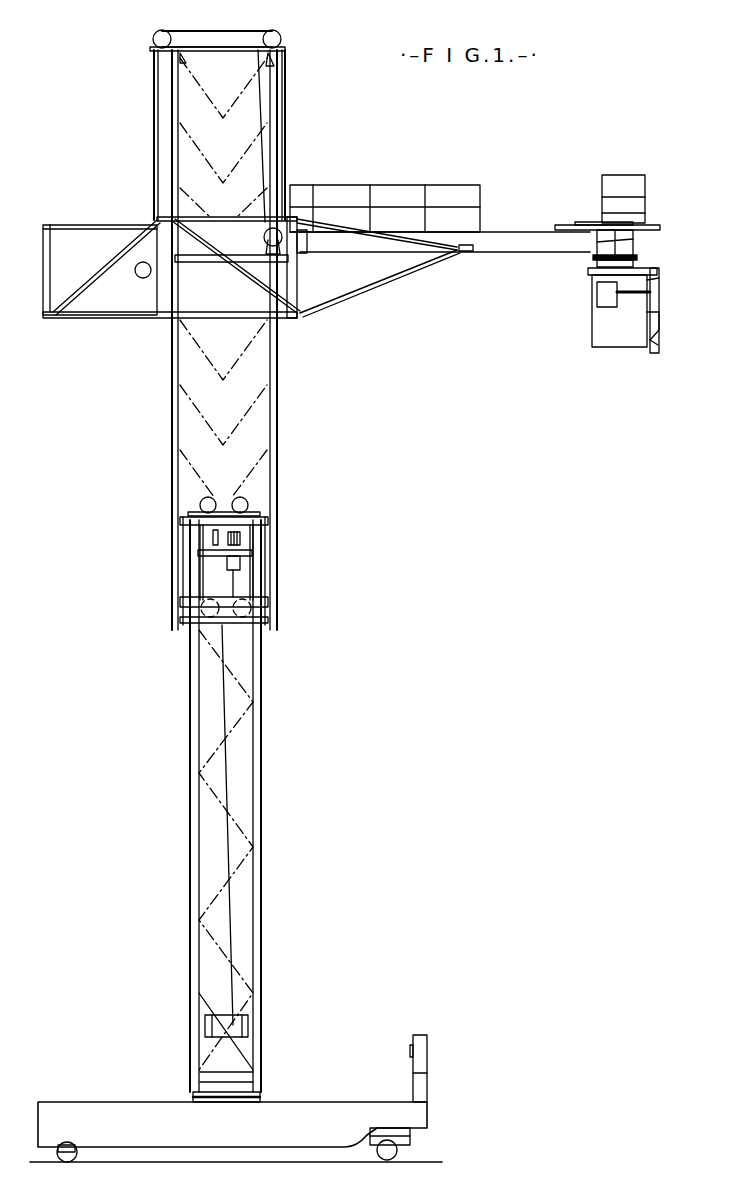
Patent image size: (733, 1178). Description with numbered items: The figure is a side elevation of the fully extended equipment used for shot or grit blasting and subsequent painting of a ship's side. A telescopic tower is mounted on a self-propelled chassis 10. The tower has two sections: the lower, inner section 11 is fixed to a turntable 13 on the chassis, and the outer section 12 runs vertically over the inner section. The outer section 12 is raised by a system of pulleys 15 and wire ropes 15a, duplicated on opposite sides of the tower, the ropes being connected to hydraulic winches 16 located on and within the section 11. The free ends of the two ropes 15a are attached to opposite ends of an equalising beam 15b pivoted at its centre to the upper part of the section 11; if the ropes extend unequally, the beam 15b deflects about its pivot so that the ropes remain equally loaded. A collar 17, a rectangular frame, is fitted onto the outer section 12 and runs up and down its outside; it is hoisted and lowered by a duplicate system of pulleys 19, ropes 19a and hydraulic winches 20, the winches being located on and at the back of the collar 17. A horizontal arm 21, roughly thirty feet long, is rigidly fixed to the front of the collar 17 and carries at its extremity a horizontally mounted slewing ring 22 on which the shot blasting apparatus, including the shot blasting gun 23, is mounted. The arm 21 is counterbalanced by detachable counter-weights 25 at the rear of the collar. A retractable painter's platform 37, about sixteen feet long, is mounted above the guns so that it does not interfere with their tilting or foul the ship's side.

The self-propelled chassis 10 is at (105, 1113).
The lower tower section 11 is at (258, 893).
The outer tower section 12 is at (278, 427).
The turntable 13 is at (257, 1098).
The pulleys 15 is at (201, 505).
The wire ropes 15a is at (225, 762).
The equalising beam 15b is at (248, 563).
The hydraulic winches 16 is at (250, 1025).
The collar 17 is at (300, 292).
The pulleys 19 is at (153, 40).
The ropes 19a is at (153, 123).
The hydraulic winches 20 is at (141, 278).
The horizontal arm 21 is at (527, 243).
The slewing ring 22 is at (640, 252).
The shot blasting gun 23 is at (662, 303).
The counter-weights 25 is at (77, 267).
The painter's platform 37 is at (603, 222).